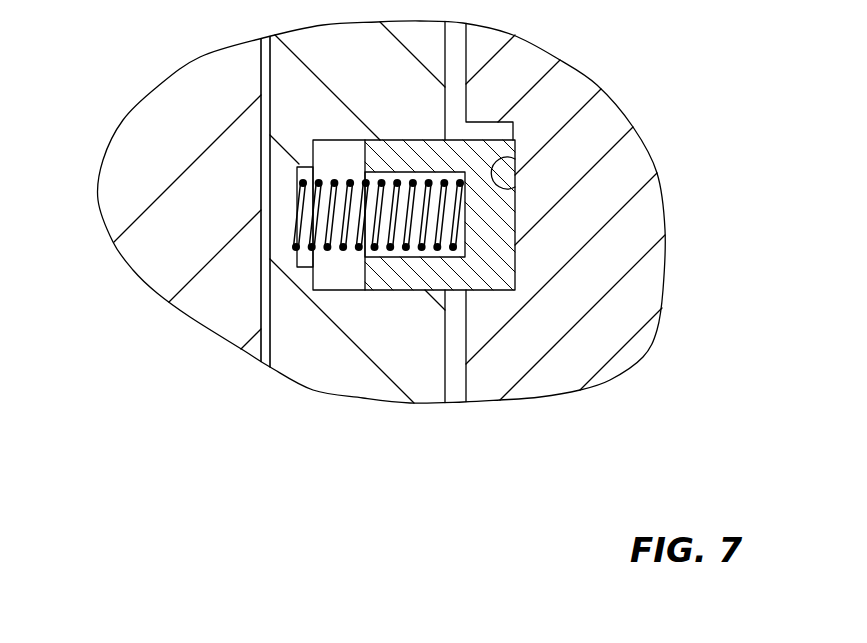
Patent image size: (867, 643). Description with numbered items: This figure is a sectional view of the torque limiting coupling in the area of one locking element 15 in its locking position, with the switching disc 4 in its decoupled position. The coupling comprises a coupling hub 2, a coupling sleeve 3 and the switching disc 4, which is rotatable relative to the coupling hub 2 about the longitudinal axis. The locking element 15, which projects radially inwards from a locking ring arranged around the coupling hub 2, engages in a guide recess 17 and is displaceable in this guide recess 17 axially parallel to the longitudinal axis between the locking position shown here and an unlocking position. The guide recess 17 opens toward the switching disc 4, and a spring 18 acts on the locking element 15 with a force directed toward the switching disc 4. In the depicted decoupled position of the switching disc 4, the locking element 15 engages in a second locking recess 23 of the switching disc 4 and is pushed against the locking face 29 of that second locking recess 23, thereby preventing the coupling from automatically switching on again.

The coupling hub 2 is at (432, 377).
The coupling sleeve 3 is at (180, 262).
The switching disc 4 is at (610, 350).
The locking element 15 is at (423, 273).
The guide recess 17 is at (342, 290).
The spring 18 is at (360, 255).
The second locking recess 23 is at (512, 183).
The locking face 29 is at (493, 277).